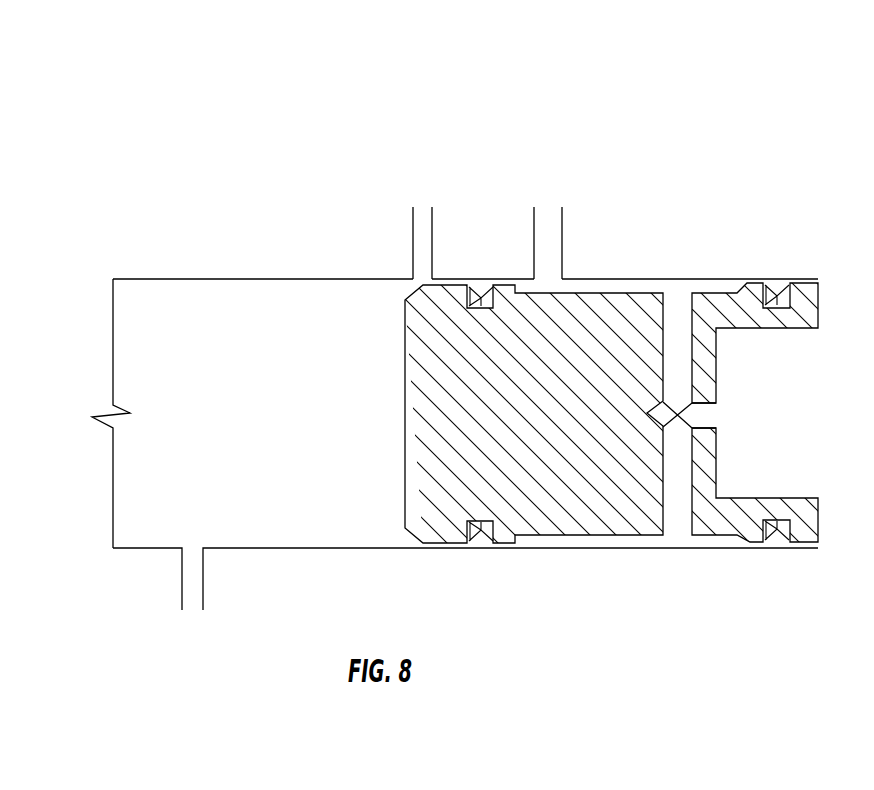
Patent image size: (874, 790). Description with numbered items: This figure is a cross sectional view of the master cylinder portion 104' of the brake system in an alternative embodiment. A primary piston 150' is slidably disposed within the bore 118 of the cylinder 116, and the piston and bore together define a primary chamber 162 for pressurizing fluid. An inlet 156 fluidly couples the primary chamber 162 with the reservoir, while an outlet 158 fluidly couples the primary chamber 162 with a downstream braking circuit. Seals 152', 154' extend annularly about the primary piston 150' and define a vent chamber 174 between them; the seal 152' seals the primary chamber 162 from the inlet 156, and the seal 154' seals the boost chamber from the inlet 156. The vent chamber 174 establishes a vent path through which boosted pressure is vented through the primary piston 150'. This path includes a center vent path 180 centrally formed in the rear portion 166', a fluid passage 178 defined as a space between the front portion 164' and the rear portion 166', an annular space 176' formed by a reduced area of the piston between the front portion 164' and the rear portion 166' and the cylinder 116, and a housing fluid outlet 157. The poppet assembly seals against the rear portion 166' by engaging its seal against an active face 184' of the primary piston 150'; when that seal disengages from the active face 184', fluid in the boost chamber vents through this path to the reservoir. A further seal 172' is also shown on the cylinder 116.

The master cylinder portion 104' is at (121, 94).
The bore 118 is at (173, 280).
The primary chamber 162 is at (183, 398).
The outlet 158 is at (204, 588).
The inlet 156 is at (433, 250).
The housing fluid outlet 157 is at (563, 223).
The front portion 164' is at (499, 420).
The seal 152' is at (445, 560).
The primary piston 150' is at (670, 579).
The annular space 176' is at (654, 247).
The vent chamber 174 is at (692, 277).
The cylinder 116 is at (735, 278).
The seal 172' is at (815, 279).
The rear portion 166' is at (781, 360).
The fluid passage 178 is at (683, 364).
The center vent path 180 is at (702, 413).
The active face 184' is at (499, 420).
The seal 154' is at (799, 558).